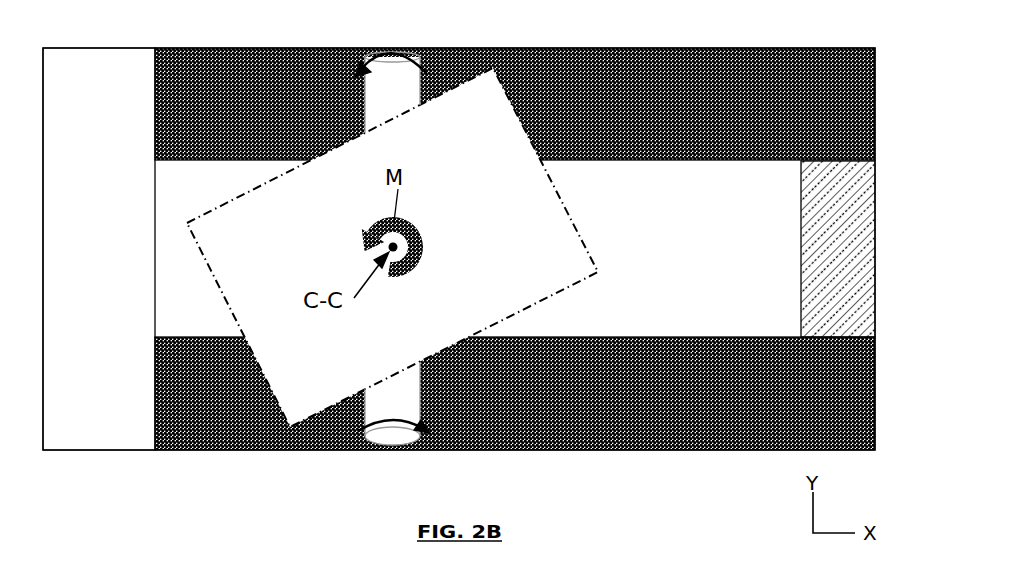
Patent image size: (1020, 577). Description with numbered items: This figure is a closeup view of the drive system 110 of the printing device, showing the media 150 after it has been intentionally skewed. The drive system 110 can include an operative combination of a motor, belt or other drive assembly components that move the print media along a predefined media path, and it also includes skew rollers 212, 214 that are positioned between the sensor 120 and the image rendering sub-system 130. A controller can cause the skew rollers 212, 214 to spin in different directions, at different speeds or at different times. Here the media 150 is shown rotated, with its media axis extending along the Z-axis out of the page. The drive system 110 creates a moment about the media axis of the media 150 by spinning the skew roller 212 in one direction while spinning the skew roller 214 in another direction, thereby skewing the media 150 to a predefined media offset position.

The drive system 110 is at (868, 438).
The sensor 120 is at (837, 249).
The image rendering sub-system 130 is at (118, 258).
The media 150 is at (417, 340).
The skew roller 212 is at (412, 101).
The skew roller 214 is at (412, 413).